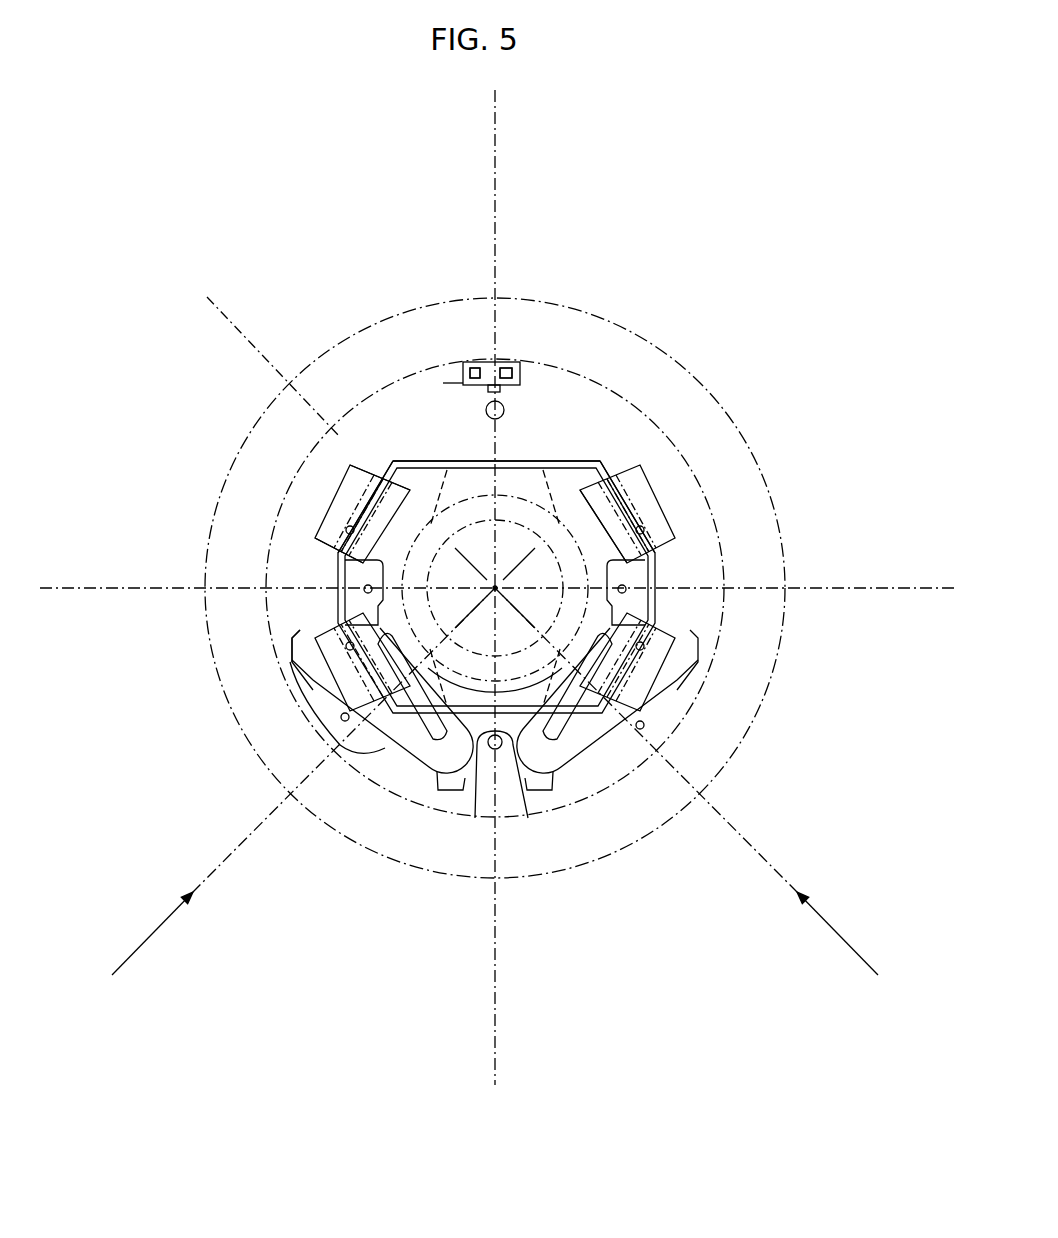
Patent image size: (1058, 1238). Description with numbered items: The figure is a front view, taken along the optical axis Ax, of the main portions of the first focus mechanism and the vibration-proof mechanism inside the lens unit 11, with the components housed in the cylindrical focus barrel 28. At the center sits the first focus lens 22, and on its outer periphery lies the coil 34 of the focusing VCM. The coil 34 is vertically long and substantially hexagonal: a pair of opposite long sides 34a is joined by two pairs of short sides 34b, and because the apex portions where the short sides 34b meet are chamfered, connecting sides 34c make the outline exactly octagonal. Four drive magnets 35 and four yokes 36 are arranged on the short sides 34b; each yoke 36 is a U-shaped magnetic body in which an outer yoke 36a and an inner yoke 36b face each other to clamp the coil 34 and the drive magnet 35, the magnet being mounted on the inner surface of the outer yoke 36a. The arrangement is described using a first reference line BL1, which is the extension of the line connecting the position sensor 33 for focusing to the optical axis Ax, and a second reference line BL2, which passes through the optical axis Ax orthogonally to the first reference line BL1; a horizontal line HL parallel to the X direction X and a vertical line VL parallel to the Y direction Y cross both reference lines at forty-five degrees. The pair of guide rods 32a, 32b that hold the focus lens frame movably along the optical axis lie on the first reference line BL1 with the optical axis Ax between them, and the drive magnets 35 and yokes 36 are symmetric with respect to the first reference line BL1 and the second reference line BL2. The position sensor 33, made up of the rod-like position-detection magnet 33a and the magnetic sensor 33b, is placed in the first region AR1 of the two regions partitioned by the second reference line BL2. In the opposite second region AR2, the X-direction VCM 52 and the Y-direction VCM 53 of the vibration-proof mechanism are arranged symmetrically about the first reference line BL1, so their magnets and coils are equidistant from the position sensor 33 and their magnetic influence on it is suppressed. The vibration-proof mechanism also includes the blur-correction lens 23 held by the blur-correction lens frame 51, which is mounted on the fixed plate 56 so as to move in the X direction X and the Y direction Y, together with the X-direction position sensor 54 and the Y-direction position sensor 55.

The lens unit 11 is at (787, 623).
The first focus lens 22 is at (603, 458).
The blur-correction lens 23 is at (416, 396).
The focus barrel 28 is at (630, 823).
The guide rod 32a is at (486, 409).
The guide rod 32b is at (490, 752).
The position sensor for focusing 33 is at (488, 362).
The position-detection magnet 33a is at (473, 364).
The magnetic sensor 33b is at (462, 367).
The coil 34 is at (528, 458).
The long side 34a is at (543, 460).
The short side 34b is at (641, 526).
The connecting side 34c is at (655, 585).
The drive magnet 35 is at (345, 482).
The yoke 36 is at (338, 484).
The outer yoke 36a is at (335, 498).
The inner yoke 36b is at (337, 550).
The blur-correction lens frame 51 is at (320, 630).
The X-direction VCM 52 is at (399, 749).
The Y-direction VCM 53 is at (552, 775).
The X-direction position sensor 54 is at (393, 461).
The Y-direction position sensor 55 is at (553, 460).
The fixed plate 56 is at (337, 593).
The optical axis Ax is at (498, 587).
The first reference line BL1 is at (497, 162).
The second reference line BL2 is at (822, 587).
The horizontal line HL is at (262, 825).
The vertical line VL is at (729, 825).
The first region AR1 is at (908, 378).
The second region AR2 is at (914, 764).
The X direction X is at (293, 799).
The Y direction Y is at (698, 793).